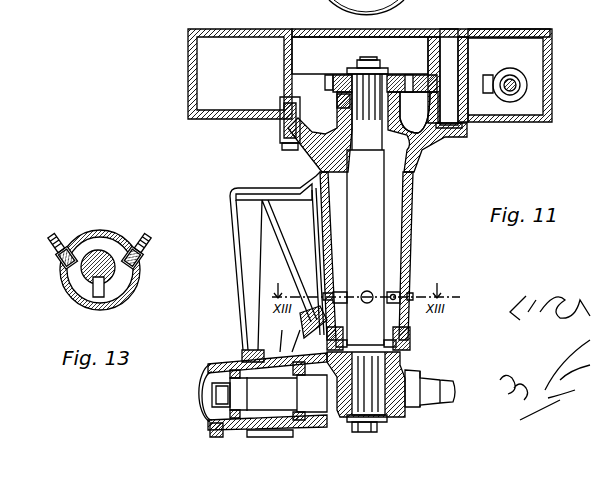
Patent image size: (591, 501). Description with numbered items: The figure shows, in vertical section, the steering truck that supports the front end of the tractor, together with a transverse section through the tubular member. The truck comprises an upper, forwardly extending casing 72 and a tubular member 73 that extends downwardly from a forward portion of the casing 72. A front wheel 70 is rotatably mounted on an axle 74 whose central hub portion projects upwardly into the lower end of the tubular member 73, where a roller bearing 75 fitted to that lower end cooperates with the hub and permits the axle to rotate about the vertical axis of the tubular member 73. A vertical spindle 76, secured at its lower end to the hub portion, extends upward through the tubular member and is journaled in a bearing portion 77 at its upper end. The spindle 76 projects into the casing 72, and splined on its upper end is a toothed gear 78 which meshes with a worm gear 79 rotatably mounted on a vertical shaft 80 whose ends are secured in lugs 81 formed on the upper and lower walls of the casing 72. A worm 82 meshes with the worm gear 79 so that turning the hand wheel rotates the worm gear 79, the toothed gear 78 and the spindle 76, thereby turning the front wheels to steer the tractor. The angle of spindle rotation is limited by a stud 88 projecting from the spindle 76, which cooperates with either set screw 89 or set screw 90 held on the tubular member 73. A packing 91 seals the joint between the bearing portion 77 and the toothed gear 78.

In FIG. 11, the front wheel 70 is at (232, 232).
In FIG. 11, the casing 72 is at (236, 119).
In FIG. 11, the tubular member 73 is at (407, 257).
In FIG. 13, the tubular member 73 is at (112, 238).
In FIG. 11, the axle 74 is at (412, 375).
In FIG. 11, the roller bearing 75 is at (407, 338).
In FIG. 11, the vertical spindle 76 is at (386, 223).
In FIG. 11, the bearing portion 77 is at (396, 128).
In FIG. 11, the toothed gear 78 is at (342, 75).
In FIG. 11, the worm gear 79 is at (488, 75).
In FIG. 11, the vertical shaft 80 is at (452, 30).
In FIG. 11, the lugs 81 is at (428, 44).
In FIG. 11, the worm 82 is at (514, 68).
In FIG. 11, the stud 88 is at (366, 291).
In FIG. 13, the stud 88 is at (106, 299).
In FIG. 11, the set screw 89 is at (413, 293).
In FIG. 13, the set screw 89 is at (145, 241).
In FIG. 13, the set screw 90 is at (55, 241).
In FIG. 11, the packing 91 is at (337, 105).